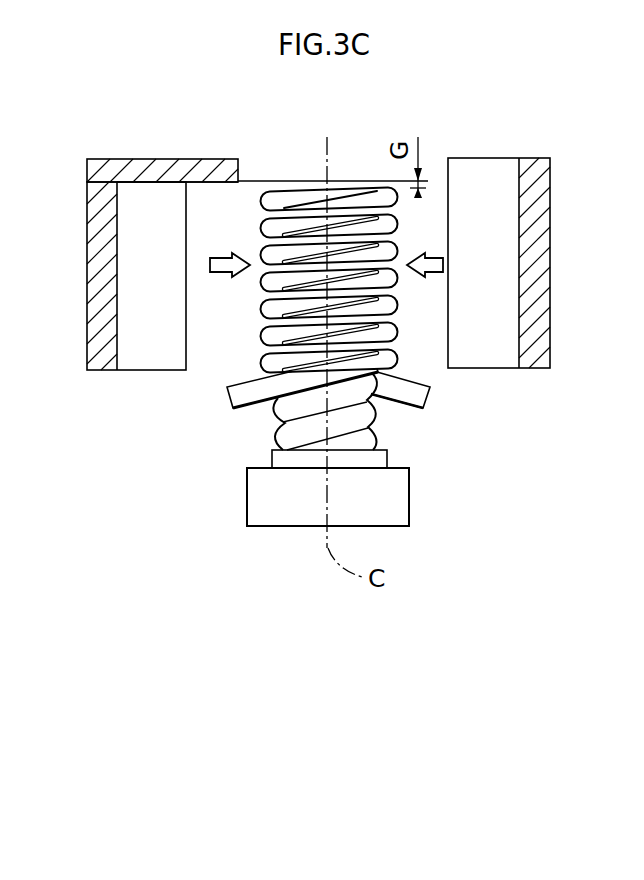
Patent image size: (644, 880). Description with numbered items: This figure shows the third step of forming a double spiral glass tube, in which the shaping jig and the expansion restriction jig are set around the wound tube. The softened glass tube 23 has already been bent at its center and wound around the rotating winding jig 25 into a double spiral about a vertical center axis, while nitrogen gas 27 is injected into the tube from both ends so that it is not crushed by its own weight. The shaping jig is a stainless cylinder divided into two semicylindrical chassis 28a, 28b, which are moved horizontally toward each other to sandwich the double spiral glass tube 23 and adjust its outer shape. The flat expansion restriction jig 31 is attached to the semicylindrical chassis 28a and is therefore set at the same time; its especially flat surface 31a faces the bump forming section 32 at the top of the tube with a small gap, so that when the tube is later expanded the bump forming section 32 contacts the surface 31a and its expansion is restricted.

The glass tube 23 is at (296, 288).
The winding jig 25 is at (383, 458).
The nitrogen gas 27 is at (213, 401).
The semicylindrical chassis 28a is at (95, 285).
The semicylindrical chassis 28b is at (538, 282).
The expansion restriction jig 31 is at (170, 162).
The surface 31a is at (152, 184).
The bump forming section 32 is at (318, 192).